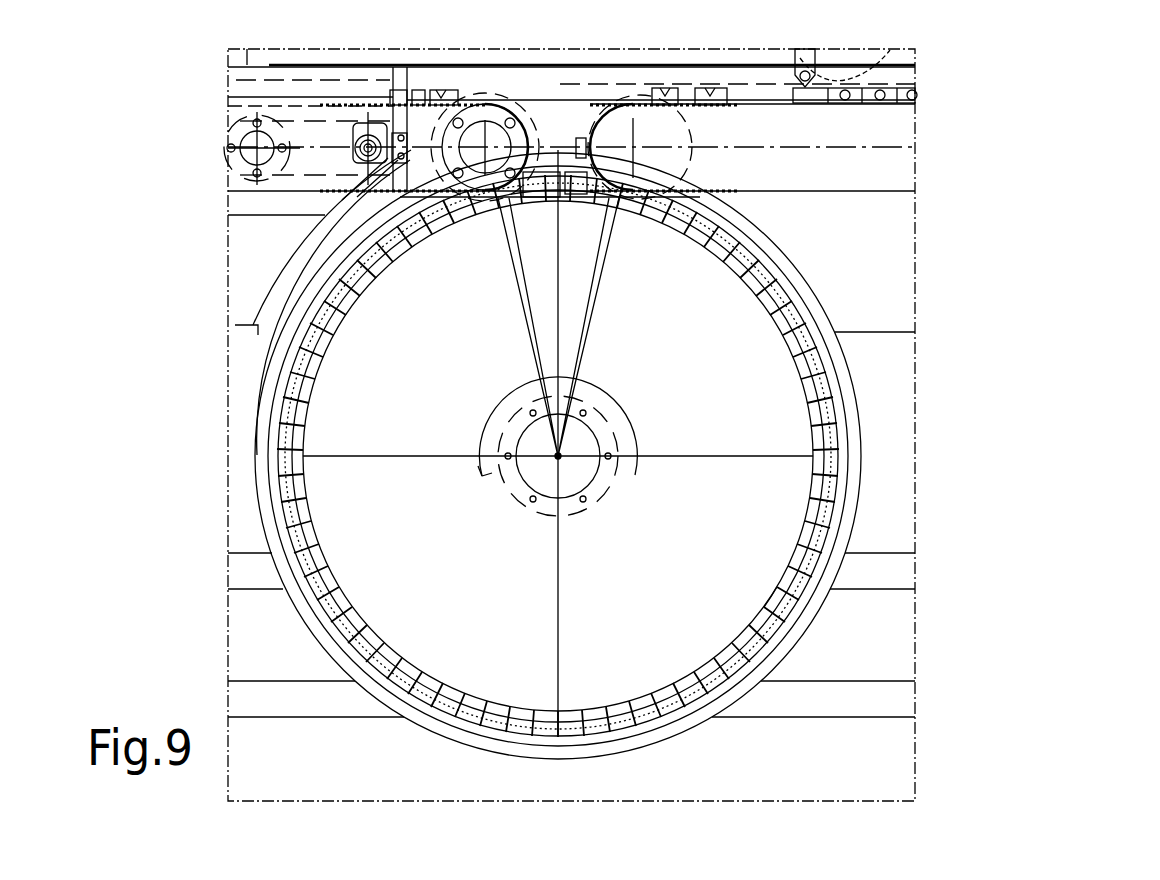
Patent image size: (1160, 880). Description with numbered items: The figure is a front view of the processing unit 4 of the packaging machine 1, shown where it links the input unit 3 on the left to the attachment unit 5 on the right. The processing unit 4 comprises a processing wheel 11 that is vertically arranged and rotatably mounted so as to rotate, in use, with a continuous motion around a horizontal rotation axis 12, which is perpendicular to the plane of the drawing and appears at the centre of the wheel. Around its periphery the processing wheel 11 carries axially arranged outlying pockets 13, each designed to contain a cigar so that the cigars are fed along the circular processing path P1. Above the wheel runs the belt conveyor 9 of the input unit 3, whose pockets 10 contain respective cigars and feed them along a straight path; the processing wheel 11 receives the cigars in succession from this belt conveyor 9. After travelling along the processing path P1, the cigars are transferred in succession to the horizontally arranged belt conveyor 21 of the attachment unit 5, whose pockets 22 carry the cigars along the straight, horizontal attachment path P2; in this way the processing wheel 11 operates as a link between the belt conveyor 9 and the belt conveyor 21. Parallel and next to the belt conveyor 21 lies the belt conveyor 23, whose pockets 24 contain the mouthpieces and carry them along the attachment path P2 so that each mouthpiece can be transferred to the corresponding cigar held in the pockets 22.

The packaging machine 1 is at (178, 605).
The input unit 3 is at (114, 125).
The processing unit 4 is at (946, 500).
The attachment unit 5 is at (1066, 123).
The belt conveyor 9 is at (214, 156).
The pockets 10 is at (440, 95).
The processing wheel 11 is at (730, 419).
The rotation axis 12 is at (565, 462).
The outlying pockets 13 is at (430, 705).
The belt conveyor 21 is at (947, 149).
The pockets 22 is at (711, 88).
The belt conveyor 23 is at (940, 61).
The pockets 24 is at (806, 62).
The processing path P1 is at (792, 612).
The attachment path P2 is at (757, 88).